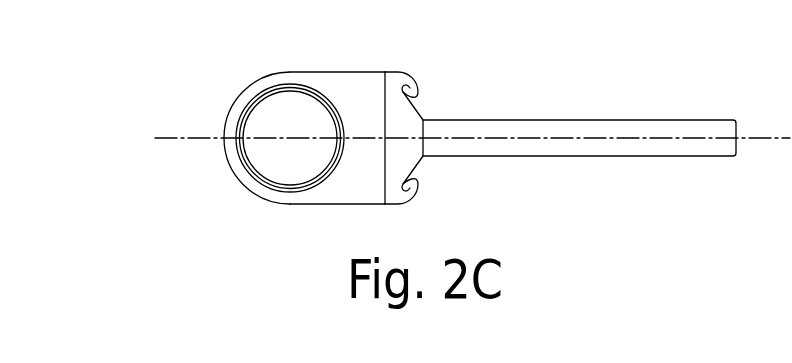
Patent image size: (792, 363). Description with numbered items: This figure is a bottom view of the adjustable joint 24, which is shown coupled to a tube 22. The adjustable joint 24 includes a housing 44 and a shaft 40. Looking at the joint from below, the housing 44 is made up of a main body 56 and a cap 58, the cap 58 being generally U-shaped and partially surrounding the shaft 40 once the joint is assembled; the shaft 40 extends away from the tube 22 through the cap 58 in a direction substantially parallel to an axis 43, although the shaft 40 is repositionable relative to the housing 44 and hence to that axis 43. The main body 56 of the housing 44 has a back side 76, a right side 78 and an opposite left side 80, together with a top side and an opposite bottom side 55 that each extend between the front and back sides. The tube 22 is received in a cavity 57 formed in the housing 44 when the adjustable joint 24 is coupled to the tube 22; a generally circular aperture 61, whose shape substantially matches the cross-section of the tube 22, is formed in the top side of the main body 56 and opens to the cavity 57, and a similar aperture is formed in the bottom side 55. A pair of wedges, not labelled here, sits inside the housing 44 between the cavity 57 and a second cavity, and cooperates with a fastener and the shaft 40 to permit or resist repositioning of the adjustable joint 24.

The adjustable joint 24 is at (472, 128).
The housing 44 is at (328, 128).
The left side 80 is at (331, 70).
The right side 78 is at (297, 205).
The back side 76 is at (225, 129).
The main body 56 is at (335, 196).
The bottom side 55 is at (414, 159).
The cap 58 is at (405, 155).
The tube 22 is at (271, 88).
The aperture 61 is at (272, 189).
The cavity 57 is at (257, 158).
The shaft 40 is at (472, 109).
The axis 43 is at (584, 137).